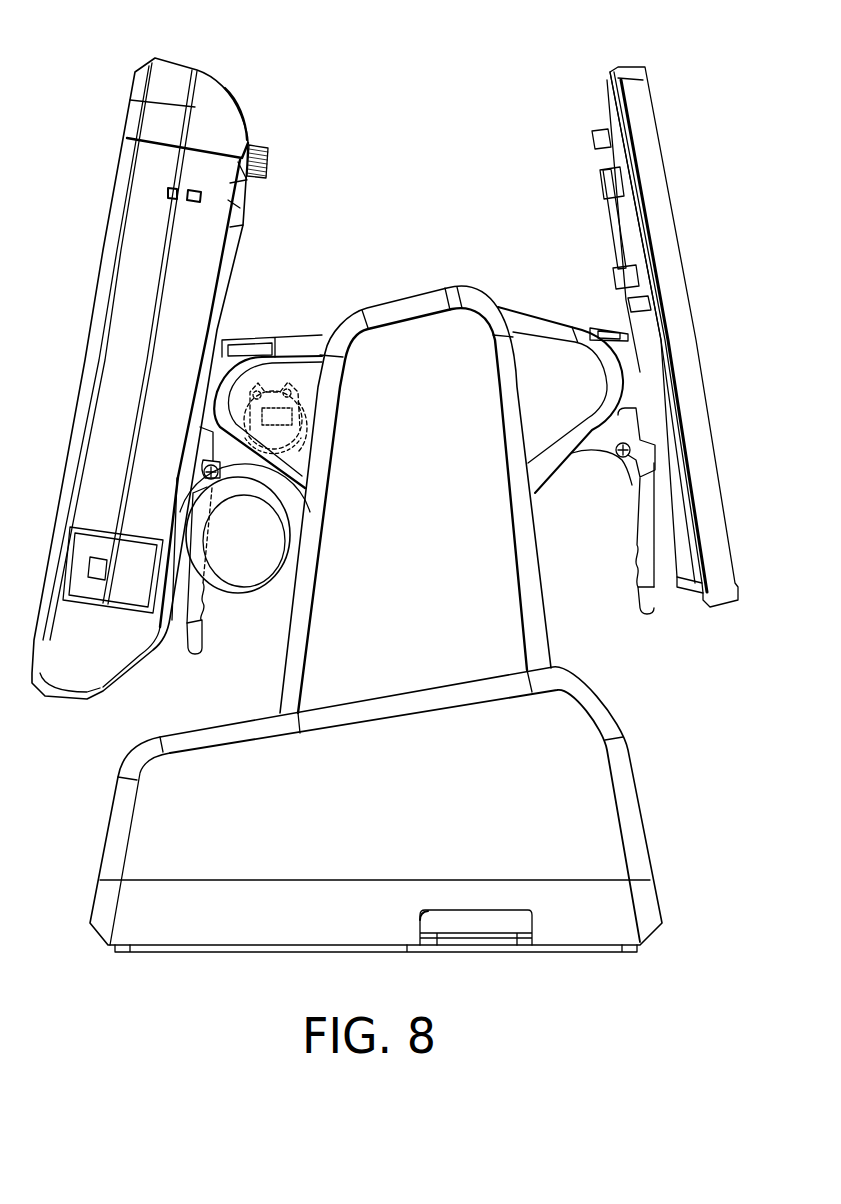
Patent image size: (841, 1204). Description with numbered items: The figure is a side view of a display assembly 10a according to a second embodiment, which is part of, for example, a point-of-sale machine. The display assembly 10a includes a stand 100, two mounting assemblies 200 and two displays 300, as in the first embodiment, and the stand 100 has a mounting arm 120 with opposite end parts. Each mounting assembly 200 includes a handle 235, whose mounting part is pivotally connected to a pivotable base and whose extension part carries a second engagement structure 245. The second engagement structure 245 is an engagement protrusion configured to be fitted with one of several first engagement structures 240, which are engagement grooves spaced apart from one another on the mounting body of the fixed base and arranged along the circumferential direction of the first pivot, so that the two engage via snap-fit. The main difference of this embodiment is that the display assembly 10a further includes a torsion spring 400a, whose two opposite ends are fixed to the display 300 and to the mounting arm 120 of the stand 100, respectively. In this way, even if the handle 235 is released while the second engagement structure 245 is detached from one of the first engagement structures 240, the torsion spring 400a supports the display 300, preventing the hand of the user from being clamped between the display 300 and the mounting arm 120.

The display assembly 10a is at (141, 53).
The stand 100 is at (382, 302).
The mounting arm 120 is at (497, 643).
The mounting assembly 200 is at (617, 490).
The handle 235 is at (183, 642).
The first engagement structure 240 is at (300, 458).
The second engagement structure 245 is at (275, 450).
The display 300 is at (140, 223).
The torsion spring 400a is at (255, 597).